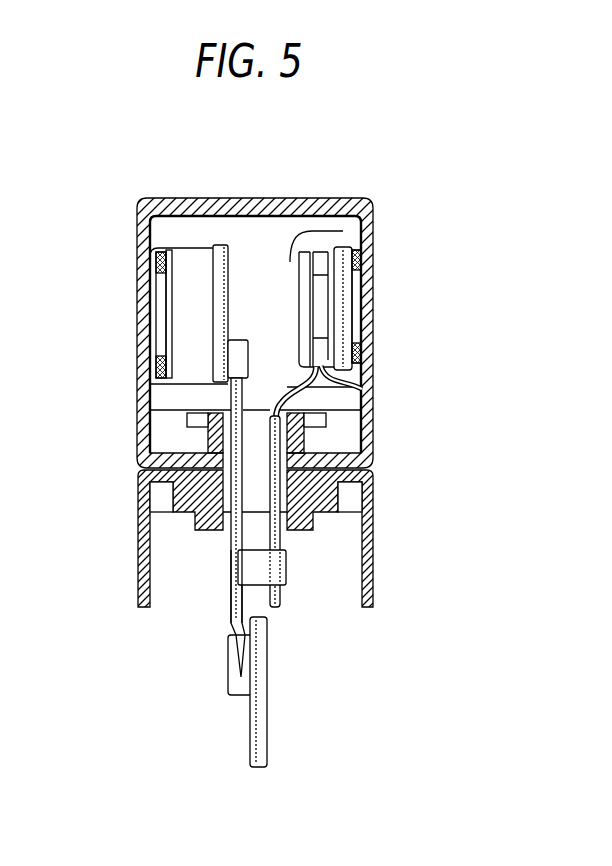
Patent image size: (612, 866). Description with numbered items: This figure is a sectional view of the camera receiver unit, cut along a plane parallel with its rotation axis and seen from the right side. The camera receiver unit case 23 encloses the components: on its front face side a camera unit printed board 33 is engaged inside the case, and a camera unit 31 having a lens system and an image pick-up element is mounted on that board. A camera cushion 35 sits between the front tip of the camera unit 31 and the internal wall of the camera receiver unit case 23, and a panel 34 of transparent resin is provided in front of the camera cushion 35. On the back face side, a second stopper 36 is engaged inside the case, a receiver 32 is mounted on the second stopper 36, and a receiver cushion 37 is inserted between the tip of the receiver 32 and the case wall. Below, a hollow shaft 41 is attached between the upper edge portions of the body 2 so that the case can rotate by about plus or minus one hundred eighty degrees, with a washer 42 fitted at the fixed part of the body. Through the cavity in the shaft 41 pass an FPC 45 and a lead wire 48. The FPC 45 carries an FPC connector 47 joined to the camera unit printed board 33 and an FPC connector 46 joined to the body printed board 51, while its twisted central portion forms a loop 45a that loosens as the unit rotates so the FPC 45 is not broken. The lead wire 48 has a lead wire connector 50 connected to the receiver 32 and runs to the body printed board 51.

The body 2 is at (375, 549).
The camera receiver unit case 23 is at (300, 198).
The camera unit 31 is at (172, 260).
The receiver 32 is at (336, 313).
The camera unit printed board 33 is at (216, 245).
The panel 34 is at (143, 310).
The camera cushion 35 is at (236, 358).
The second stopper 36 is at (375, 231).
The receiver cushion 37 is at (372, 262).
The shaft 41 is at (320, 435).
The washer 42 is at (340, 494).
The FPC 45 is at (238, 568).
The loop 45a is at (286, 568).
The FPC connector 46 is at (230, 666).
The FPC connector 47 is at (143, 422).
The lead wire 48 is at (362, 392).
The lead wire connector 50 is at (374, 379).
The body printed board 51 is at (260, 712).